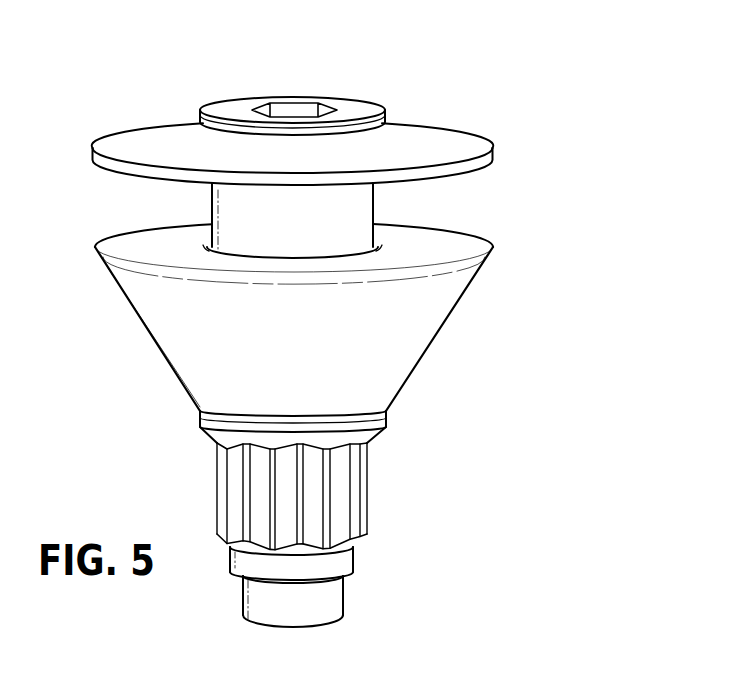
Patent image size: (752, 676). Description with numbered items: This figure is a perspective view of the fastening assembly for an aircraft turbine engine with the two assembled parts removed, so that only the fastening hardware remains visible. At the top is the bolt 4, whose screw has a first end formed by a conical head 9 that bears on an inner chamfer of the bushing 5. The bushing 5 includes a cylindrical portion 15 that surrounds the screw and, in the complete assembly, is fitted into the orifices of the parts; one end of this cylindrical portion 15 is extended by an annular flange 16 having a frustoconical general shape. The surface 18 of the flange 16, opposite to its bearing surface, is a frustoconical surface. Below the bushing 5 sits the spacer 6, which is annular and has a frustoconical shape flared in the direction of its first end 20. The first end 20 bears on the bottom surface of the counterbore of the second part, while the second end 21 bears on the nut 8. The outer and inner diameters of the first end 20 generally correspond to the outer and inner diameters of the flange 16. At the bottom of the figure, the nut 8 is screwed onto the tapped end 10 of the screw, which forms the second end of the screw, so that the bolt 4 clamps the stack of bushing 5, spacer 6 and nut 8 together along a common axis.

The bolt 4 is at (397, 519).
The bushing 5 is at (236, 220).
The cylindrical portion 15 is at (235, 210).
The spacer 6 is at (372, 342).
The nut 8 is at (237, 483).
The conical head 9 is at (352, 108).
The tapped end 10 is at (323, 603).
The annular flange 16 is at (300, 123).
The frustoconical surface 18 is at (432, 143).
The first end 20 is at (457, 248).
The second end 21 is at (368, 395).